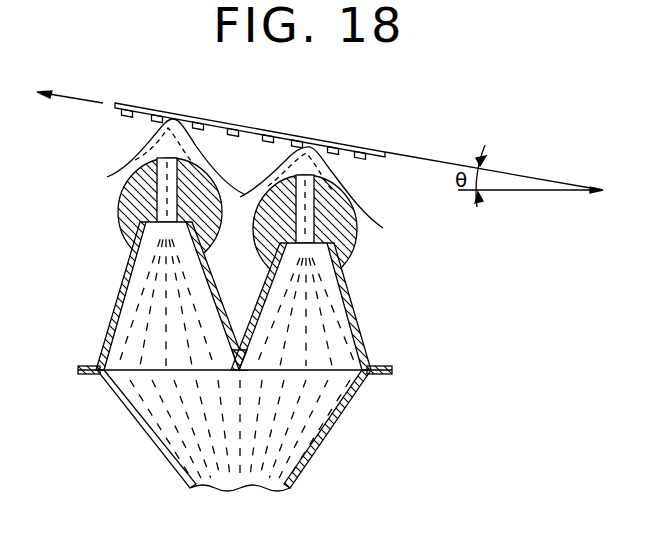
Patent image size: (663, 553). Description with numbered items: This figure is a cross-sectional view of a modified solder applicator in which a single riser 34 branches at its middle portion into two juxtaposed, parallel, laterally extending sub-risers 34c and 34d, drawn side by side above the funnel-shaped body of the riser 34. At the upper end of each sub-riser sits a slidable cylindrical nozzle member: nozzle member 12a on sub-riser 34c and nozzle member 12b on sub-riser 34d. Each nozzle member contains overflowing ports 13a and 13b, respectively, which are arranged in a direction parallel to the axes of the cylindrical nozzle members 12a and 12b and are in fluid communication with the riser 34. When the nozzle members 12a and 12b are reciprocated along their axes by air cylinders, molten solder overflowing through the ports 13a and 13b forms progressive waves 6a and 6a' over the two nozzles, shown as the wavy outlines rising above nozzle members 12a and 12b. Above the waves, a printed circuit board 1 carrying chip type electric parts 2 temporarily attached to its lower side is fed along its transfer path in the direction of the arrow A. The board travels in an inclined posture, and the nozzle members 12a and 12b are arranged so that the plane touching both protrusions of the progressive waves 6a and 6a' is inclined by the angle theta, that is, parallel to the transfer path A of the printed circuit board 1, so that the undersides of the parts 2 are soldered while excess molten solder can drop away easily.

The printed circuit board 1 is at (200, 119).
The chip type electric parts 2 is at (238, 126).
The progressive wave 6a is at (316, 169).
The progressive wave 6a' is at (157, 156).
The cylindrical nozzle member 12a is at (352, 222).
The cylindrical nozzle member 12b is at (117, 207).
The overflowing ports 13a is at (307, 196).
The overflowing ports 13b is at (162, 186).
The riser 34 is at (345, 411).
The sub-riser 34c is at (361, 319).
The sub-riser 34d is at (118, 309).
The direction of travel A is at (70, 87).